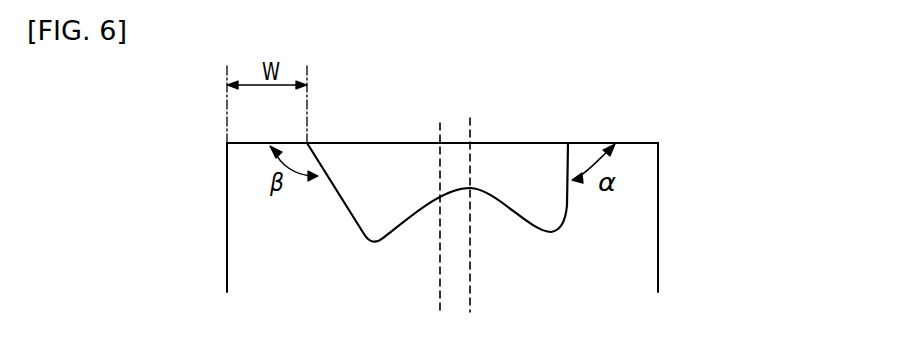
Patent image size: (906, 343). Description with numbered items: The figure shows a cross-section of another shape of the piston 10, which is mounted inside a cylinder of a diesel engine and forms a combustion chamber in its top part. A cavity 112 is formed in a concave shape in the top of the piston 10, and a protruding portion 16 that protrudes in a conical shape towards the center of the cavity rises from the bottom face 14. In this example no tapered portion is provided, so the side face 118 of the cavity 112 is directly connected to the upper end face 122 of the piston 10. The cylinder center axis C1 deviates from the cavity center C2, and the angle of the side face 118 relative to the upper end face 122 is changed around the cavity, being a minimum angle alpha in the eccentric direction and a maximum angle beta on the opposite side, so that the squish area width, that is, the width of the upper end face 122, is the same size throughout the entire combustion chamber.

The piston 10 is at (680, 144).
The bottom face 14 is at (373, 240).
The protruding portion 16 is at (478, 188).
The cavity 112 is at (453, 157).
The side face 118 is at (348, 213).
The upper end face 122 is at (276, 143).
The cylinder center axis C1 is at (438, 289).
The cavity center C2 is at (472, 288).